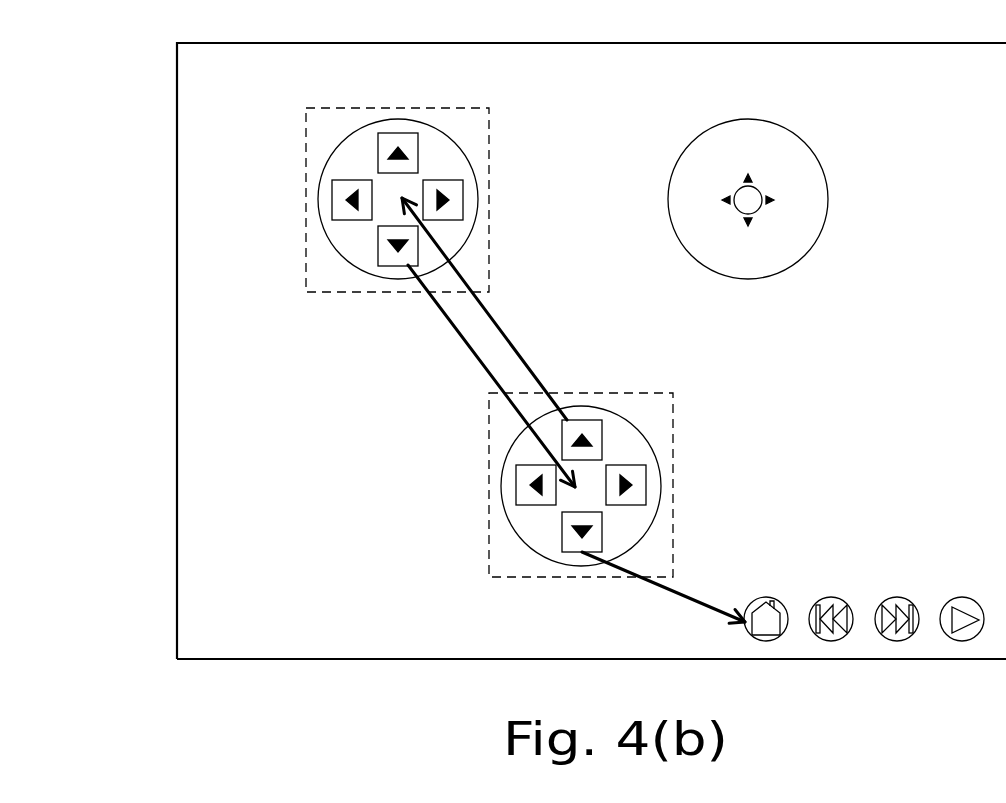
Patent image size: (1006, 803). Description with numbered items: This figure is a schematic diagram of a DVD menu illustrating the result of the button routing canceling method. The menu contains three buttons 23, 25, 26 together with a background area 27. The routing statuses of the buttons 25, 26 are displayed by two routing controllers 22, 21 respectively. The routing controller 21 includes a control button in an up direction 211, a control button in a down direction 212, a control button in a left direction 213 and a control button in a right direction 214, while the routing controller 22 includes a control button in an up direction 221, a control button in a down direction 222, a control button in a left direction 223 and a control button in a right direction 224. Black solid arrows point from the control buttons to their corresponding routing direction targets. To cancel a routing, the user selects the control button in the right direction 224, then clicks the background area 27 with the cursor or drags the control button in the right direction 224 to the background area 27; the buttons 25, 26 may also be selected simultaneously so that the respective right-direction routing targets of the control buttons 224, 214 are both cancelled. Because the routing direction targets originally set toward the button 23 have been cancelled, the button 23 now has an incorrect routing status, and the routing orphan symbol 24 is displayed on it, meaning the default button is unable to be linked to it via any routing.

The routing controller 21 is at (489, 418).
The routing controller 22 is at (306, 122).
The button 23 is at (790, 155).
The routing orphan symbol 24 is at (750, 203).
The button 25 is at (440, 148).
The button 26 is at (623, 435).
The background area 27 is at (591, 351).
The control button in an up direction 211 is at (583, 438).
The control button in a down direction 212 is at (579, 535).
The control button in a left direction 213 is at (535, 488).
The control button in a right direction 214 is at (627, 482).
The control button in an up direction 221 is at (394, 138).
The control button in a down direction 222 is at (382, 255).
The control button in a left direction 223 is at (338, 195).
The control button in a right direction 224 is at (453, 188).